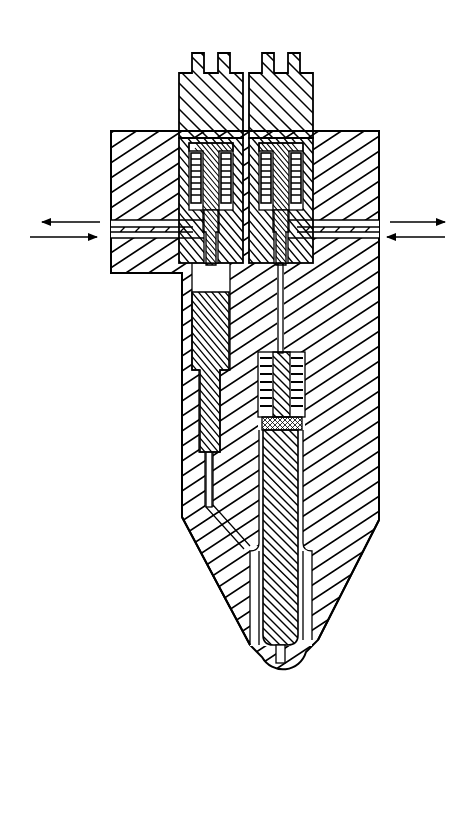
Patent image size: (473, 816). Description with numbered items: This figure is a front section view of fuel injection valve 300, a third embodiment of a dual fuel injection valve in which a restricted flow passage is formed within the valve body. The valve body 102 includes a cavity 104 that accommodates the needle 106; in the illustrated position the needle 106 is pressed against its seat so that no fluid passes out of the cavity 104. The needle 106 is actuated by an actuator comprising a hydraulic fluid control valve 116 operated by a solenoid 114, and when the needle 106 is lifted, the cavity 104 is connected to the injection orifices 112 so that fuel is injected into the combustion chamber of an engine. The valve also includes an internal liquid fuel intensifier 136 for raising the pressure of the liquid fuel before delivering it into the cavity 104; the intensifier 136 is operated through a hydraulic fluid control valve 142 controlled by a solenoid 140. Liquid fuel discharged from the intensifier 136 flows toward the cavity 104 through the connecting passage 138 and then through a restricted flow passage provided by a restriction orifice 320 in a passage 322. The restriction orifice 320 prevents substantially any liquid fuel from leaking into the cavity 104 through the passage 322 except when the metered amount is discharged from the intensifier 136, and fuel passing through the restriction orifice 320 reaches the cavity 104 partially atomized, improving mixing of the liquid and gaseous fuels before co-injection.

The fuel injection valve 300 is at (341, 77).
The valve body 102 is at (341, 172).
The cavity 104 is at (305, 588).
The needle 106 is at (303, 493).
The injection orifices 112 is at (291, 655).
The solenoid 114 is at (287, 112).
The hydraulic fluid control valve 116 is at (345, 150).
The liquid fuel intensifier 136 is at (195, 320).
The connecting passage 138 is at (207, 481).
The solenoid 140 is at (198, 97).
The hydraulic fluid control valve 142 is at (190, 160).
The restriction orifice 320 is at (227, 523).
The passage 322 is at (217, 567).